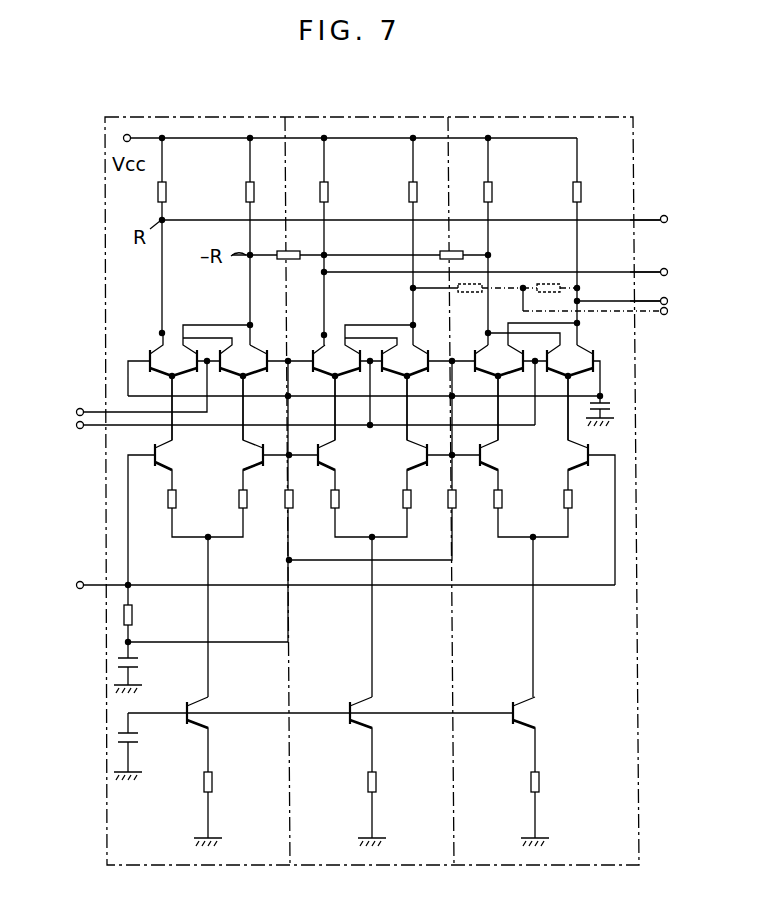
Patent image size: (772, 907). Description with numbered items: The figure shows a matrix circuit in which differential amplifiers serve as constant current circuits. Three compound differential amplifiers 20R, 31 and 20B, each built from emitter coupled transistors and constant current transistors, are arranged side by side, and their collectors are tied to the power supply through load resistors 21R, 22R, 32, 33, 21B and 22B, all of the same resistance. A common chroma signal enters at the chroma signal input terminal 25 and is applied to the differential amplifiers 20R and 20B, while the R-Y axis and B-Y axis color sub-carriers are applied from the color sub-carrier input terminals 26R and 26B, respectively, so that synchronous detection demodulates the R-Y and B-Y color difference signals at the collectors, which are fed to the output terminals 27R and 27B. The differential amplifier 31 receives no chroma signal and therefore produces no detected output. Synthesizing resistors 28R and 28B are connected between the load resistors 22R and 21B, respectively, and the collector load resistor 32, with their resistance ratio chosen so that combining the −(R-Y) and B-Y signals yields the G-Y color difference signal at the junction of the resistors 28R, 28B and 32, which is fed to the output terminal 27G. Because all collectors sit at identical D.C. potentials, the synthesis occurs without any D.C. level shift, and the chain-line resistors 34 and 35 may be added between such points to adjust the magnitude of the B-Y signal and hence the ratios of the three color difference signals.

The compound differential amplifier 20R is at (236, 117).
The compound differential amplifier 31 is at (388, 117).
The compound differential amplifier 20B is at (572, 117).
The load resistor 21R is at (168, 193).
The load resistor 22R is at (246, 192).
The collector load resistor 32 is at (331, 193).
The load resistor 33 is at (409, 193).
The load resistor 21B is at (494, 192).
The load resistor 22B is at (572, 192).
The synthesizing resistor 28R is at (287, 261).
The synthesizing resistor 28B is at (466, 251).
The resistor 34 is at (481, 293).
The resistor 35 is at (547, 283).
The output terminal 27R is at (668, 219).
The output terminal 27G is at (668, 272).
The output terminal 27B is at (672, 295).
The color sub-carrier input terminal 26R is at (77, 411).
The color sub-carrier input terminal 26B is at (76, 428).
The chroma signal input terminal 25 is at (75, 585).